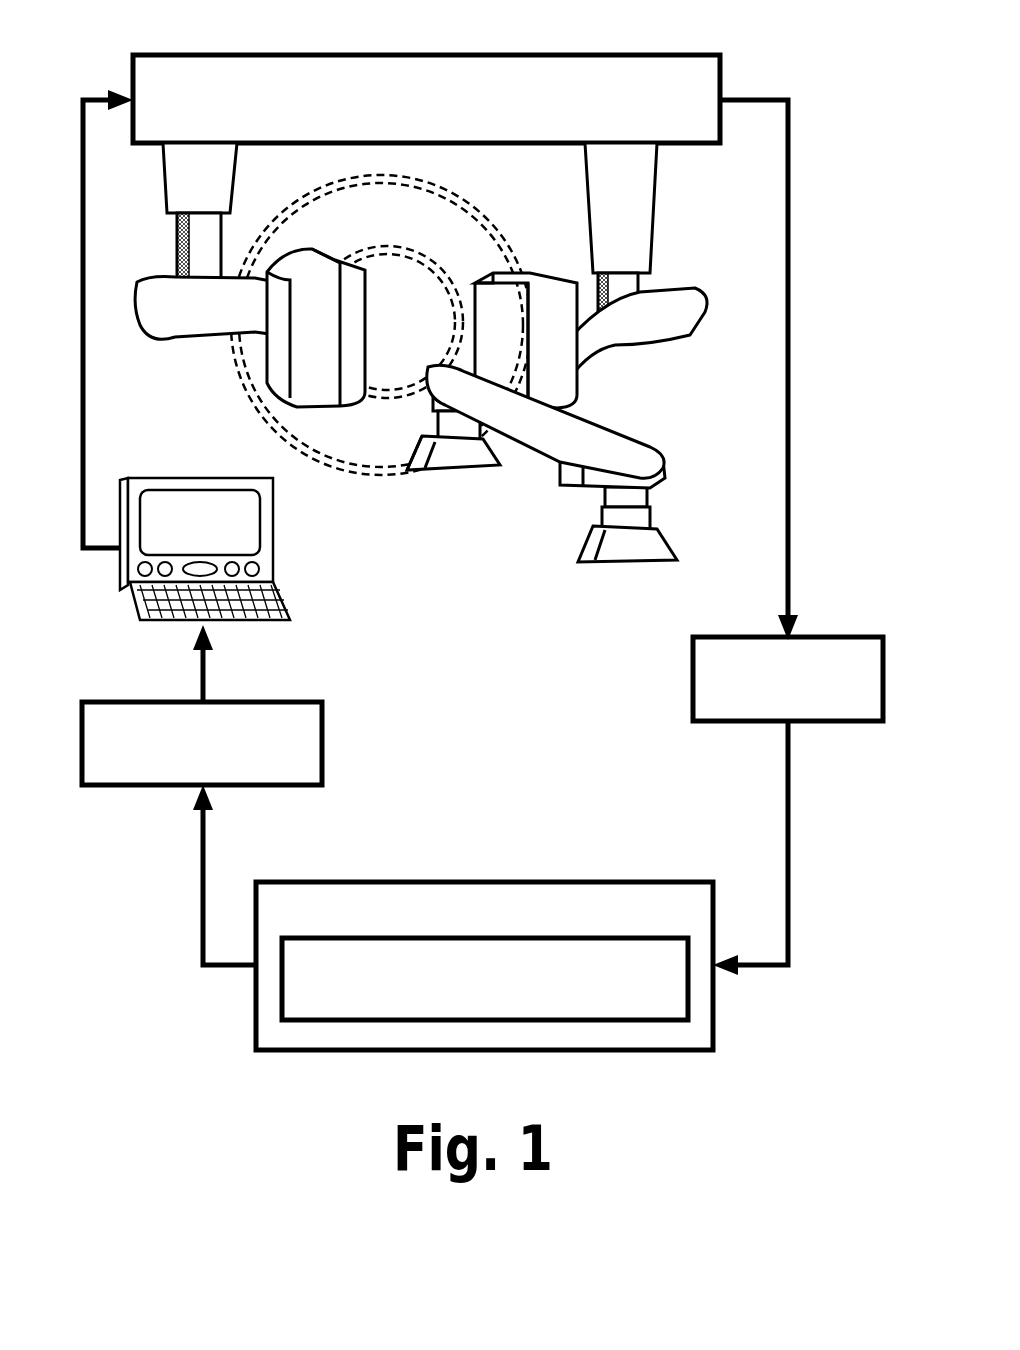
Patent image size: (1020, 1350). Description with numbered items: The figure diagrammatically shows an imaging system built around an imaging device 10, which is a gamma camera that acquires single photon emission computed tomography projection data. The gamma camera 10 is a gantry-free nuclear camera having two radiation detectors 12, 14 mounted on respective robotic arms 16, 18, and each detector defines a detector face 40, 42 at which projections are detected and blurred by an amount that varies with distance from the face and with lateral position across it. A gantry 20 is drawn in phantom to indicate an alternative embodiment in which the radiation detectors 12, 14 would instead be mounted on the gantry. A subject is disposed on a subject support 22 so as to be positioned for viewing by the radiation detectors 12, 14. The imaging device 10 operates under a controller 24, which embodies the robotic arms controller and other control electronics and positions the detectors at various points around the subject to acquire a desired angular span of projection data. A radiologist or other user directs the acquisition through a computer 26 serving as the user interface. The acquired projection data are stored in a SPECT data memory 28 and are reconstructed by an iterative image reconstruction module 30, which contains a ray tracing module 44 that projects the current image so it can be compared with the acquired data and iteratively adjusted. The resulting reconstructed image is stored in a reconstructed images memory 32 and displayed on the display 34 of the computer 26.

The imaging device 10 is at (440, 556).
The radiation detector 12 is at (320, 435).
The radiation detector 14 is at (600, 394).
The robotic arm 16 is at (203, 250).
The robotic arm 18 is at (620, 283).
The gantry 20 is at (487, 212).
The subject support 22 is at (540, 448).
The controller 24 is at (565, 55).
The computer 26 is at (170, 447).
The SPECT data memory 28 is at (826, 637).
The iterative image reconstruction module 30 is at (545, 882).
The reconstructed images memory 32 is at (325, 745).
The display 34 is at (215, 522).
The detector face 40 is at (365, 318).
The detector face 42 is at (495, 332).
The ray tracing module 44 is at (330, 1052).